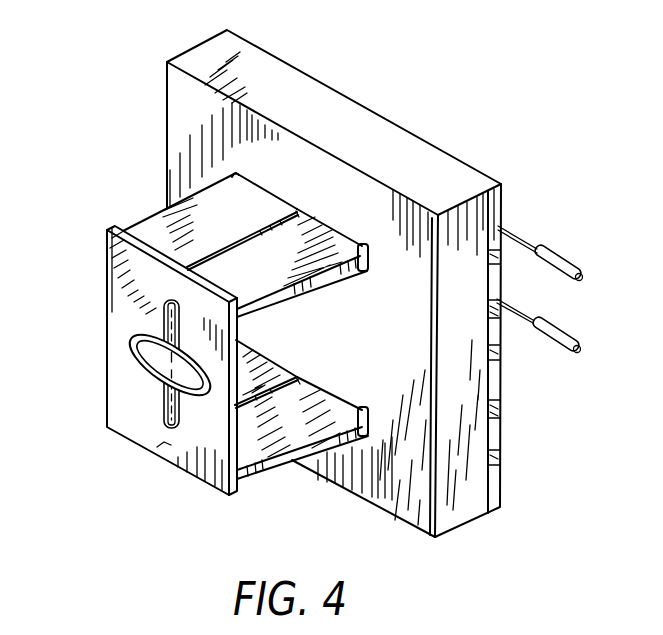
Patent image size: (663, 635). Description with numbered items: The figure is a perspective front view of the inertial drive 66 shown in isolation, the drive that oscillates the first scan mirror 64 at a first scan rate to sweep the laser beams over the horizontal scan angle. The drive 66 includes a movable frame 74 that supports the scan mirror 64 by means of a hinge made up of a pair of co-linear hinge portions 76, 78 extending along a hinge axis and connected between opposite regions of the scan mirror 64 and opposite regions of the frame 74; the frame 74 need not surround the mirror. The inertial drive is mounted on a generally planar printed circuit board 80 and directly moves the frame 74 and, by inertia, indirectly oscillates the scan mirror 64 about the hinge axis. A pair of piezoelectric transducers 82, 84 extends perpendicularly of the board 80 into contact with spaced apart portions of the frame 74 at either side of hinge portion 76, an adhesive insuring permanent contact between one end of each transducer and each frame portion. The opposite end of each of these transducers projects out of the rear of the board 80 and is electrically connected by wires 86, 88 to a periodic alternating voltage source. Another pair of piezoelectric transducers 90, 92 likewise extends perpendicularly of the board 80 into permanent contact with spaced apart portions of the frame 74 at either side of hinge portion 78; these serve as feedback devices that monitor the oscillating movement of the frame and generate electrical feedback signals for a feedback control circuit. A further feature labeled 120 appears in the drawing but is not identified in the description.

The inertial drive 66 is at (164, 30).
The printed circuit board 80 is at (388, 124).
The piezoelectric transducer 82 is at (161, 212).
The piezoelectric transducer 84 is at (278, 275).
The piezoelectric transducer 90 is at (279, 381).
The piezoelectric transducer 92 is at (262, 457).
The wire 86 is at (560, 256).
The wire 88 is at (553, 338).
The movable frame 74 is at (120, 292).
The hinge portion 76 is at (164, 321).
The hinge portion 78 is at (179, 417).
The first scan mirror 64 is at (158, 368).
The latch region 120 is at (140, 455).